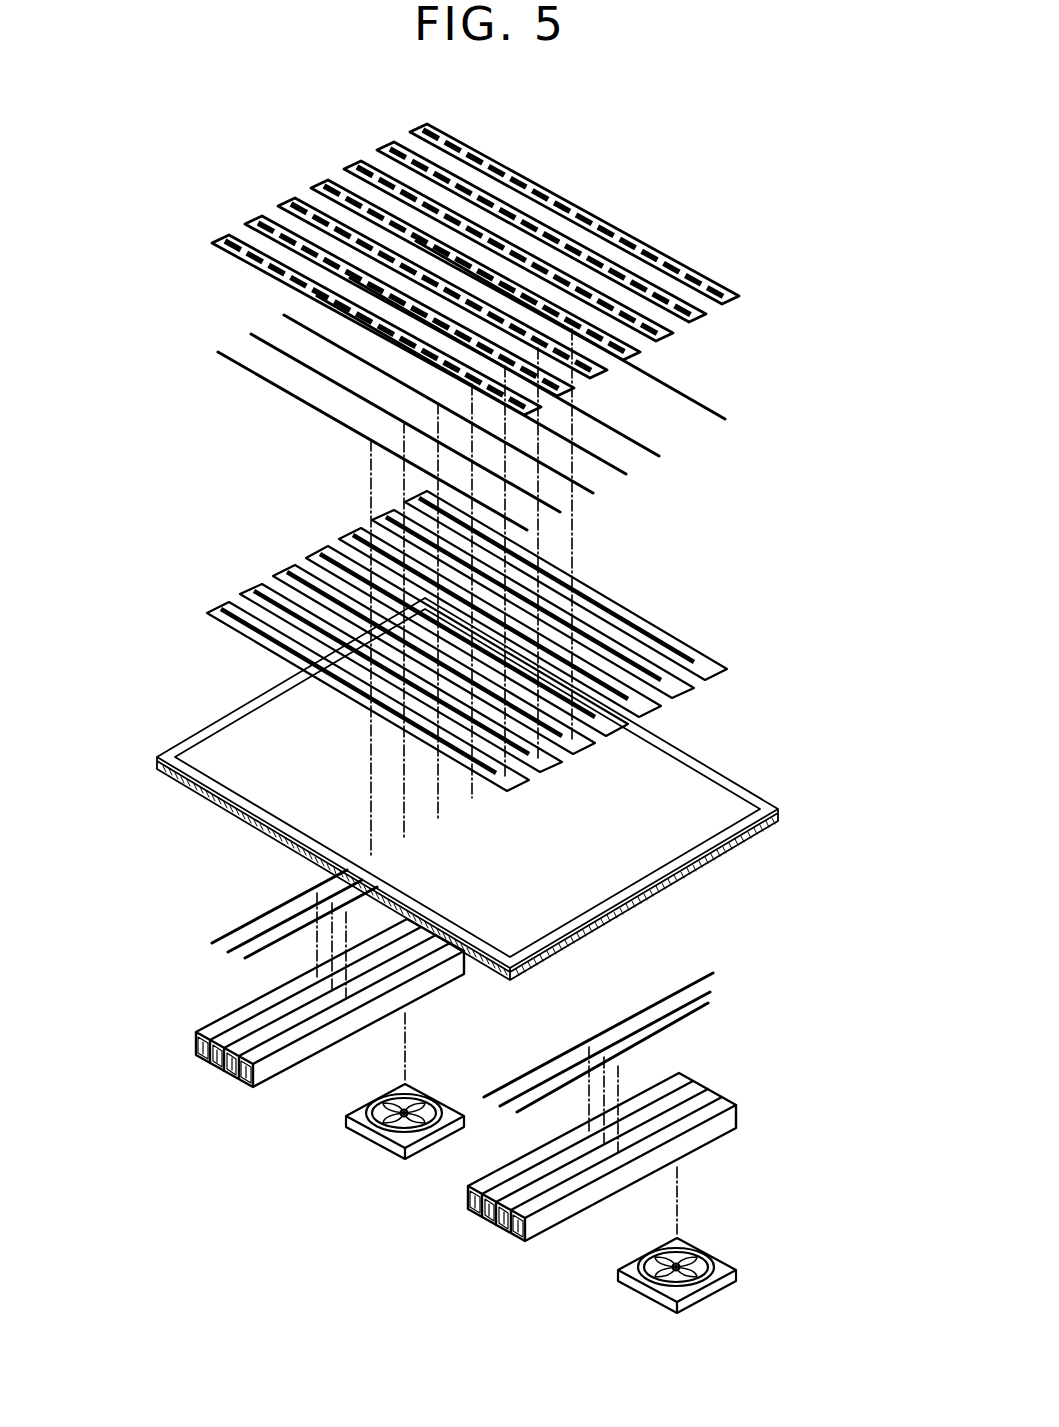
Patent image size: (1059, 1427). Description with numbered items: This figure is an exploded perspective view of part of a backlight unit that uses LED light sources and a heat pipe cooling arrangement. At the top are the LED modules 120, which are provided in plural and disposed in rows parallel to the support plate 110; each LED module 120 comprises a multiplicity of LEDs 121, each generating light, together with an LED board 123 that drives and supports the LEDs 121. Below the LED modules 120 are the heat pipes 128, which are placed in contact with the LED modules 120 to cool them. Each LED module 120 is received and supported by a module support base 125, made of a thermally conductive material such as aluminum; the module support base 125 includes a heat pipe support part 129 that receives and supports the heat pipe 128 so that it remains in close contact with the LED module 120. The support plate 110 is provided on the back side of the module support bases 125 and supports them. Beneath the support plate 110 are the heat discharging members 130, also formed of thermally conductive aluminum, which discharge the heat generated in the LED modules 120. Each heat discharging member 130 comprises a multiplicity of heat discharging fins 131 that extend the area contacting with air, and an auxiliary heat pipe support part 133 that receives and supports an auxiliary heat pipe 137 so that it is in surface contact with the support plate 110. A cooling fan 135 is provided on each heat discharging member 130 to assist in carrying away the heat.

The support plate 110 is at (685, 759).
The LED module 120 is at (486, 269).
The LEDs 121 is at (592, 229).
The LED board 123 is at (690, 274).
The module support base 125 is at (483, 641).
The heat pipe 128 is at (723, 420).
The heat pipe support part 129 is at (694, 649).
The heat discharging member 130 is at (439, 1122).
The heat discharging fins 131 is at (253, 1088).
The auxiliary heat pipe support part 133 is at (220, 1160).
The cooling fan 135 is at (718, 1264).
The auxiliary heat pipe 137 is at (712, 993).